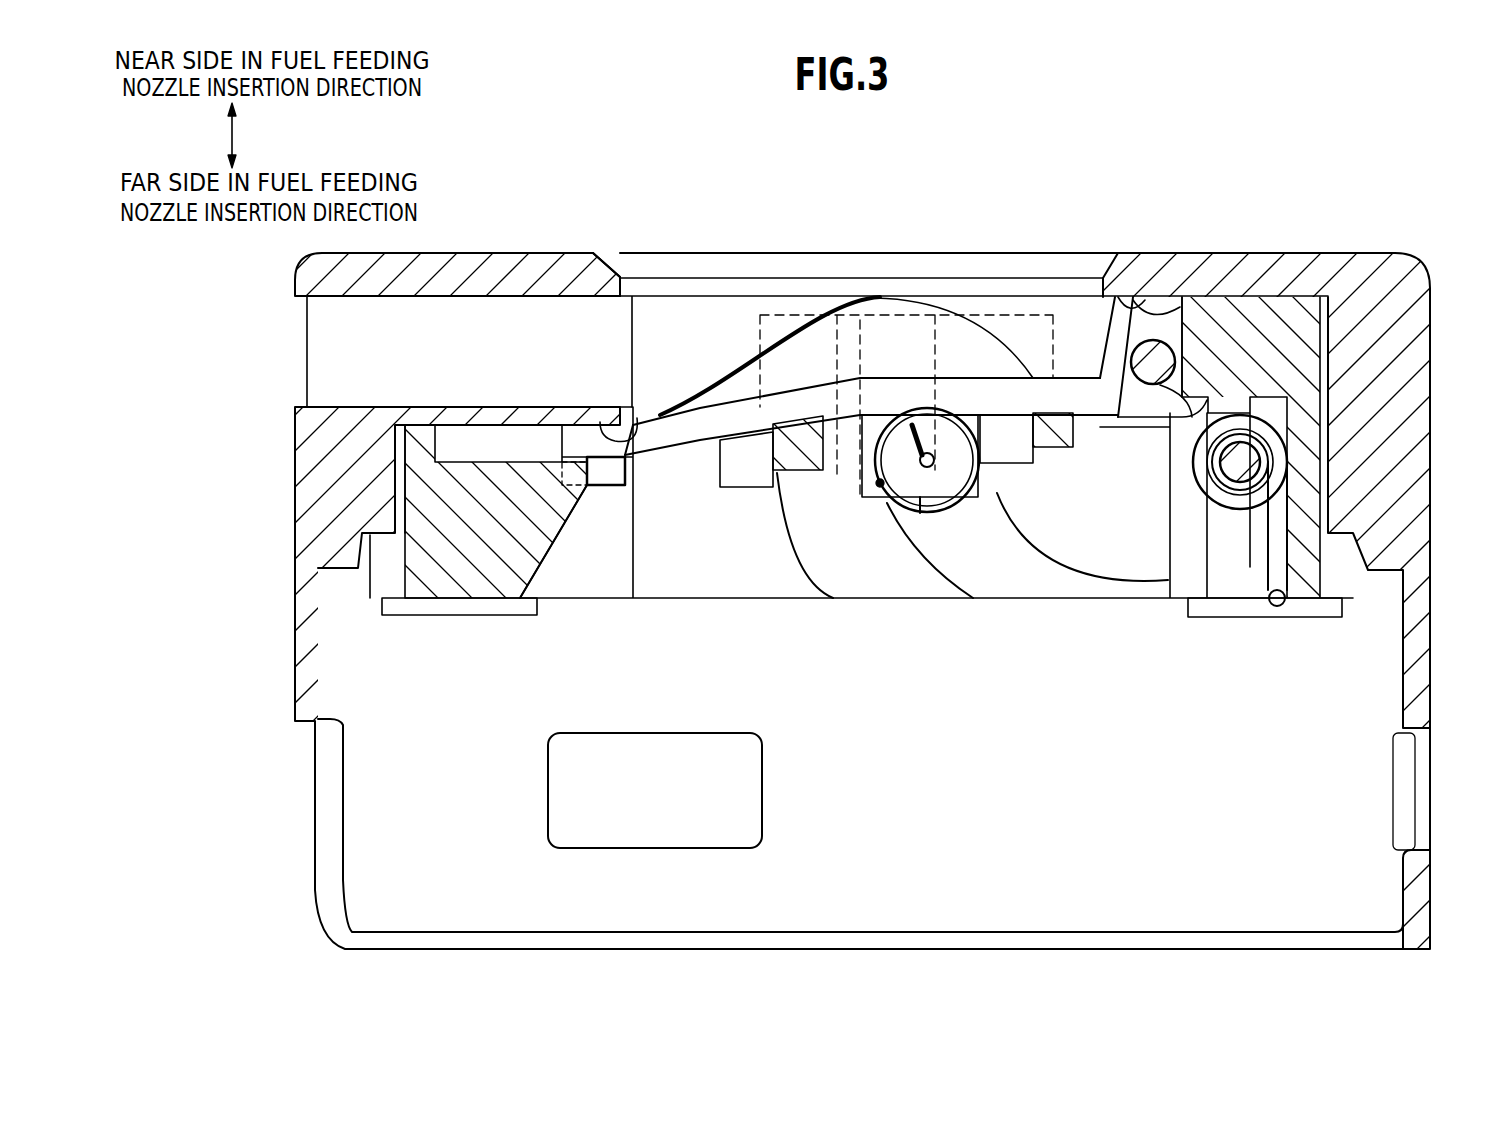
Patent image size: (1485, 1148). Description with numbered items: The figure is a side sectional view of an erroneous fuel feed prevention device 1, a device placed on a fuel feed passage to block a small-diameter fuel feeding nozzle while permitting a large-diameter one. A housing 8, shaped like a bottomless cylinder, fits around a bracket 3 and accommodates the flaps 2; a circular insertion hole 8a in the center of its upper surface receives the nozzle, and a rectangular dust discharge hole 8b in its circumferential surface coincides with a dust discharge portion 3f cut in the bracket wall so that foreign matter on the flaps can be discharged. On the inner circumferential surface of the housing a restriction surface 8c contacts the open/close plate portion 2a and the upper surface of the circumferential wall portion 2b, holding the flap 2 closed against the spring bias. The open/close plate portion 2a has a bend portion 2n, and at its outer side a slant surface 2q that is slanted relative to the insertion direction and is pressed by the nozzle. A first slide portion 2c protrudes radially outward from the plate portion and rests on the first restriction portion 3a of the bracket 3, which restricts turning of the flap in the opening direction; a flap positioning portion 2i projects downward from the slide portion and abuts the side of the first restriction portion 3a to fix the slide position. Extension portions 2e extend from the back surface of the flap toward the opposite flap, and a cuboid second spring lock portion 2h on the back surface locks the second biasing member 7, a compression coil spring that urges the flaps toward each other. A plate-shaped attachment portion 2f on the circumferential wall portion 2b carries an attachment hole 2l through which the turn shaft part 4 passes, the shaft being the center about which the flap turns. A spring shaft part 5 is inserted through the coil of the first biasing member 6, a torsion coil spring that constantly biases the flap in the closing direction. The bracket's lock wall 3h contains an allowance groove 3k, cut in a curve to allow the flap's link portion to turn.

The erroneous fuel feed prevention device 1 is at (1362, 178).
The flap 2 is at (980, 375).
The open/close plate portion 2a is at (1045, 395).
The circumferential wall portion 2b is at (1090, 350).
The first slide portion 2c is at (584, 443).
The extension portion 2e is at (803, 463).
The attachment portion 2f is at (1153, 313).
The second spring lock portion 2h is at (942, 470).
The flap positioning portion 2i is at (588, 500).
The attachment hole 2l is at (1182, 323).
The bend portion 2n is at (868, 330).
The slant surface 2q is at (915, 345).
The bracket 3 is at (584, 601).
The first restriction portion 3a is at (636, 503).
The dust discharge portion 3f is at (410, 410).
The lock wall 3h is at (785, 313).
The allowance groove 3k is at (833, 347).
The turn shaft part 4 is at (1148, 383).
The spring shaft part 5 is at (1232, 462).
The first biasing member 6 is at (1242, 493).
The second biasing member 7 is at (887, 503).
The housing 8 is at (517, 252).
The insertion hole 8a is at (598, 258).
The dust discharge hole 8b is at (415, 305).
The restriction surface 8c is at (622, 440).